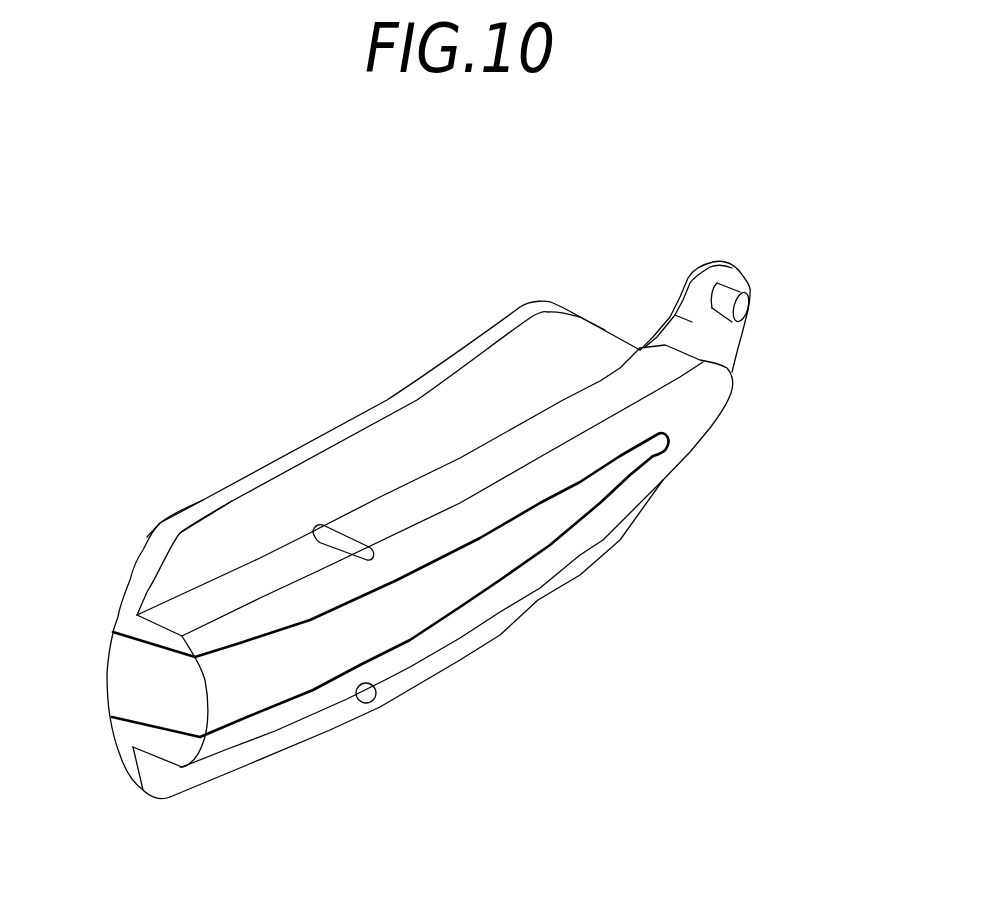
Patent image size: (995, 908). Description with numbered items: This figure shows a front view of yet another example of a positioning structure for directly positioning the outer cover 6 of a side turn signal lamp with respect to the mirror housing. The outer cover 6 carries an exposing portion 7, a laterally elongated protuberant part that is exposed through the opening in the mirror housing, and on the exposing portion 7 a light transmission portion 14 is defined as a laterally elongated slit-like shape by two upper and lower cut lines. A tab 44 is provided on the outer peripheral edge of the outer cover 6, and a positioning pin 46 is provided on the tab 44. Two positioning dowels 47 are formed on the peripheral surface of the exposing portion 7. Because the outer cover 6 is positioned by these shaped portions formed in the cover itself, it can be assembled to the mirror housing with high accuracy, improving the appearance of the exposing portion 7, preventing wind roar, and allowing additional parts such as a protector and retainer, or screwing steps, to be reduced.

The outer cover 6 is at (430, 370).
The exposing portion 7 is at (470, 633).
The light transmission portion 14 is at (550, 545).
The tab 44 is at (675, 315).
The positioning pin 46 is at (749, 306).
The positioning dowel 47 is at (326, 531).